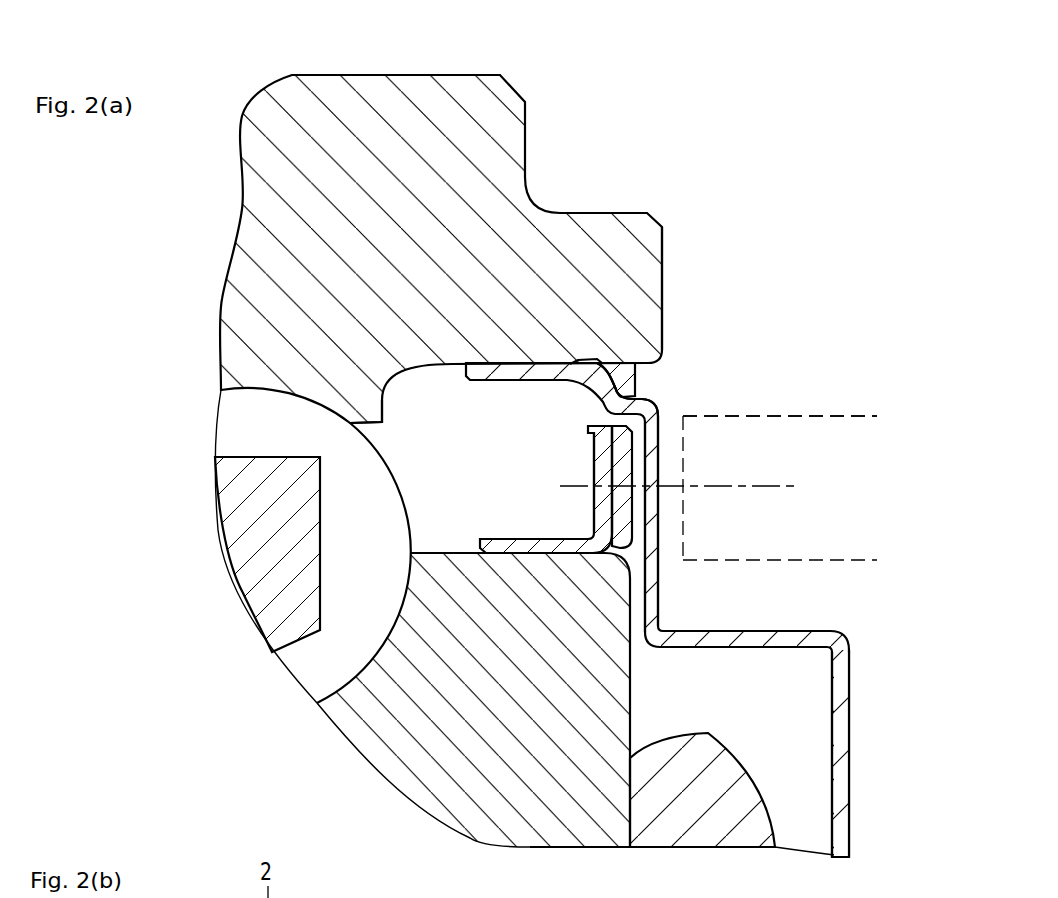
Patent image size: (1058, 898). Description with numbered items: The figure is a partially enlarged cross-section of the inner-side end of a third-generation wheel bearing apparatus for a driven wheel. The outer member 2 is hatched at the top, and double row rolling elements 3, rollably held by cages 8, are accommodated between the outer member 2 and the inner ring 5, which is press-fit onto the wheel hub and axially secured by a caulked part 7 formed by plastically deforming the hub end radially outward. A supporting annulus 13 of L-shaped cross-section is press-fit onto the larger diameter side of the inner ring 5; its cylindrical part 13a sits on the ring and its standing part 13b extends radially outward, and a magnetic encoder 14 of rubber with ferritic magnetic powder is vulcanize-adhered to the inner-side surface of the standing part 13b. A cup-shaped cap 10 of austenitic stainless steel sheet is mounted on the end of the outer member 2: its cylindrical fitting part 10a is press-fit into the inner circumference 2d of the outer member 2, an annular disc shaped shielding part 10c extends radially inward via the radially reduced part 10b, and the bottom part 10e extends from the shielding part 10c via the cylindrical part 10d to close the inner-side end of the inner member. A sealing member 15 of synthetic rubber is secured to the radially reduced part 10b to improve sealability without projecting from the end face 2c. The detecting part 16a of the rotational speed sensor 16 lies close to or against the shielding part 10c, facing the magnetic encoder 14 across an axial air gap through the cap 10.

The outer member 2 is at (264, 271).
The end face of the outer member 2c is at (660, 312).
The inner circumference of the outer member 2d is at (487, 392).
The rolling elements (balls) 3 is at (306, 671).
The inner ring 5 is at (425, 743).
The caulked part 7 is at (722, 815).
The cage 8 is at (255, 508).
The cap 10 is at (661, 518).
The cylindrical fitting part 10a is at (543, 375).
The radially reduced part 10b is at (640, 388).
The shielding part 10c is at (653, 458).
The cylindrical part 10d is at (727, 637).
The bottom part 10e is at (840, 720).
The supporting annulus 13 is at (452, 458).
The cylindrical part 13a is at (562, 542).
The standing part 13b is at (603, 477).
The magnetic encoder 14 is at (622, 453).
The sealing member 15 is at (620, 362).
The rotational speed sensor 16 is at (828, 463).
The detecting part 16a is at (675, 412).